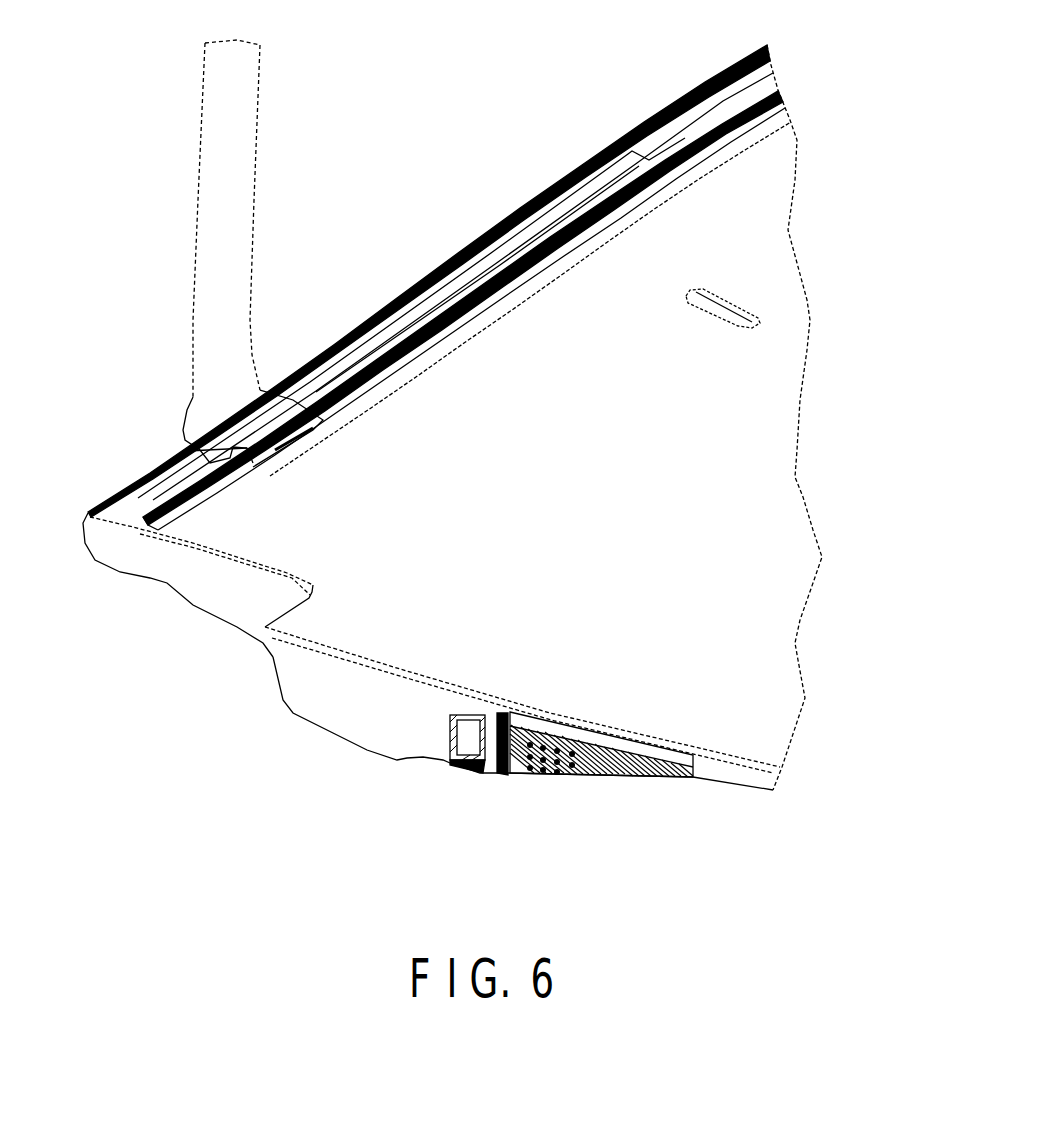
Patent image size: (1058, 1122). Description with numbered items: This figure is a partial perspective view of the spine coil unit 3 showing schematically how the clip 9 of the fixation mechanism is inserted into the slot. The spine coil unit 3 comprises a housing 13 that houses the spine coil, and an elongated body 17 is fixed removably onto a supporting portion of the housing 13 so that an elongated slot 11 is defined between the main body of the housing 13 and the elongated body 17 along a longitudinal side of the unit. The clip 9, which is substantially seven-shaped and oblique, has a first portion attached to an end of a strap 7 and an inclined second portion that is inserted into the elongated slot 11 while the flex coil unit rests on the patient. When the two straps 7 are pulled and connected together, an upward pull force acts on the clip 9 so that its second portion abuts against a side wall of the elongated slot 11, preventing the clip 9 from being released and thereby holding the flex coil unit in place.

The spine coil unit 3 is at (823, 437).
The strap 7 is at (197, 252).
The clip 9 is at (188, 451).
The elongated slot 11 is at (618, 212).
The housing 13 is at (225, 587).
The elongated body 17 is at (516, 262).